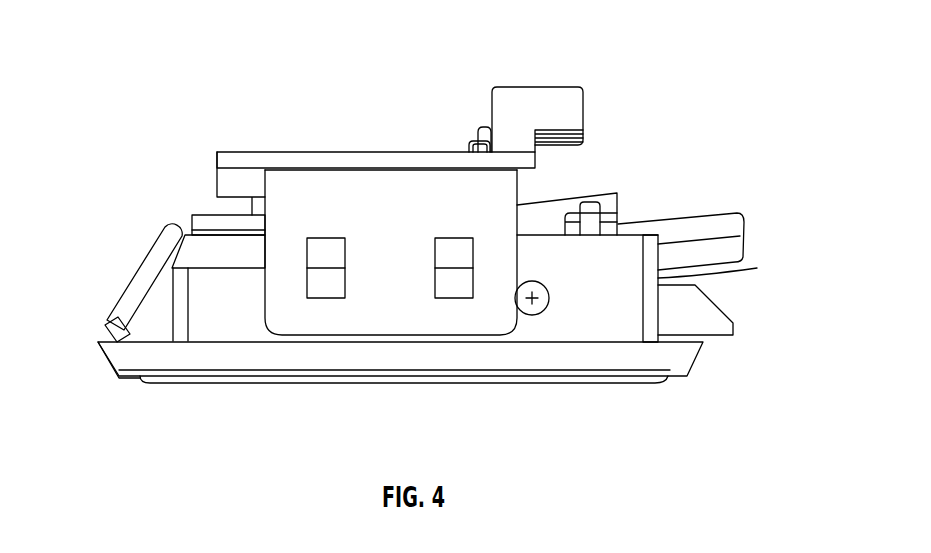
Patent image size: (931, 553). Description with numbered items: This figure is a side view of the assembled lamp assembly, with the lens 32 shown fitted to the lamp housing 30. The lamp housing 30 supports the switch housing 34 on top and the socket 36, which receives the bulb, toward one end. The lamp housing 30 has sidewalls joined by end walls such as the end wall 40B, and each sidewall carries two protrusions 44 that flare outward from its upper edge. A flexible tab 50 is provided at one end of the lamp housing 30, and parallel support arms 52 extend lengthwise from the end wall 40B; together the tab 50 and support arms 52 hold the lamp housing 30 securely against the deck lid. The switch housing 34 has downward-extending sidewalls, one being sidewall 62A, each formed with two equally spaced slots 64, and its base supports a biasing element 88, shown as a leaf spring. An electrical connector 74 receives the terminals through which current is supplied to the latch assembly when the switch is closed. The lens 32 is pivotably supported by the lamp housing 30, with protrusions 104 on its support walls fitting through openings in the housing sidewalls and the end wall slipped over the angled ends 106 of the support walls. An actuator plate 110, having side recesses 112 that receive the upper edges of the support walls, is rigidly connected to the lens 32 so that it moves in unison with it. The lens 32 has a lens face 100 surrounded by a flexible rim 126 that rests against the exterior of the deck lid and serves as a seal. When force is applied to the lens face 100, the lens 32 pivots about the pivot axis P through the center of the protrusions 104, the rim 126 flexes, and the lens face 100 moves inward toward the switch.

The lamp housing 30 is at (228, 338).
The lens 32 is at (658, 360).
The switch housing 34 is at (303, 152).
The socket 36 is at (687, 217).
The end wall 40B is at (748, 269).
The protrusions 44 is at (332, 292).
The flexible tab 50 is at (130, 278).
The support arms 52 is at (726, 318).
The sidewall 62A is at (415, 195).
The slots 64 is at (307, 248).
The electrical connector 74 is at (540, 100).
The biasing element 88 is at (217, 203).
The lens face 100 is at (272, 385).
The protrusions 104 is at (539, 306).
The angled ends 106 is at (185, 257).
The actuator plate 110 is at (192, 222).
The side recesses 112 is at (203, 233).
The flexible rim 126 is at (120, 370).
The pivot axis P is at (540, 298).